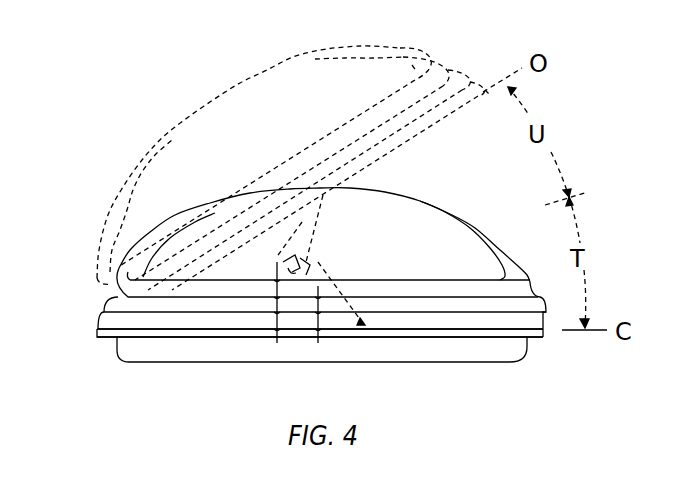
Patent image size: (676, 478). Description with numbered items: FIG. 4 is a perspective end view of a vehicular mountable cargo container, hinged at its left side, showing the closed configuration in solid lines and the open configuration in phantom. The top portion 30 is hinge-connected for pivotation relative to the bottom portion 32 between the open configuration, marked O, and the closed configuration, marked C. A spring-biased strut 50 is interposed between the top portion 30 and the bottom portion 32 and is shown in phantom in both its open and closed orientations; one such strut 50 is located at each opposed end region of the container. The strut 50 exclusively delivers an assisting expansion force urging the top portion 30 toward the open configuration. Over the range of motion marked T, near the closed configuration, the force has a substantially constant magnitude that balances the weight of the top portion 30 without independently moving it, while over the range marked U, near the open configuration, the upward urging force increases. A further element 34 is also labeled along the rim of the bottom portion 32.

The top portion 30 is at (192, 93).
The bottom portion 32 is at (494, 366).
The seal 34 is at (92, 333).
The spring-biased struts 50 is at (263, 342).